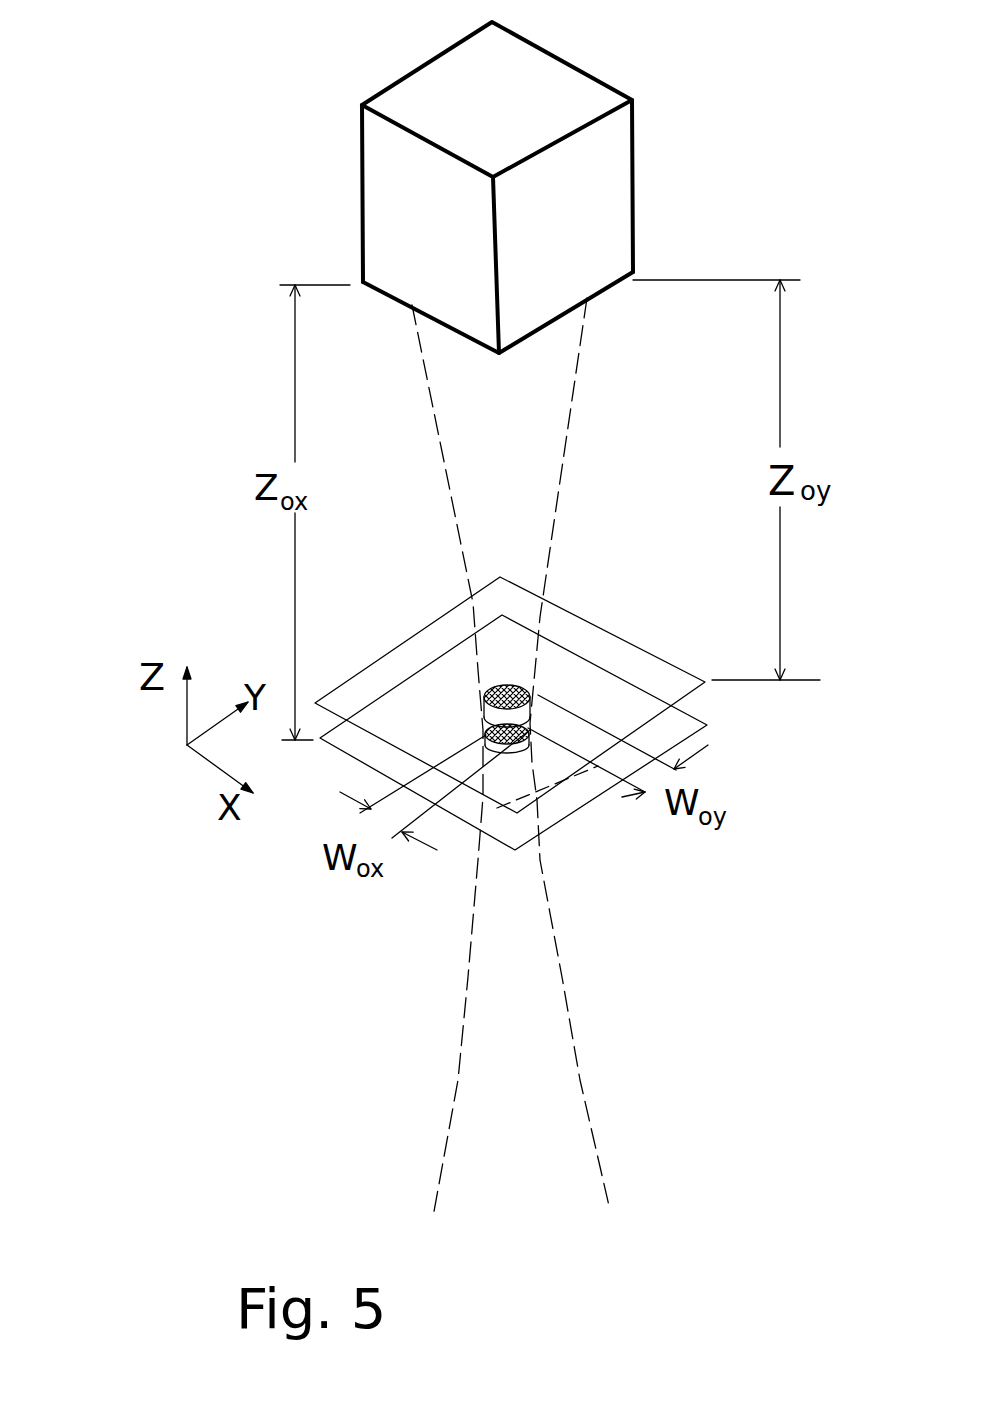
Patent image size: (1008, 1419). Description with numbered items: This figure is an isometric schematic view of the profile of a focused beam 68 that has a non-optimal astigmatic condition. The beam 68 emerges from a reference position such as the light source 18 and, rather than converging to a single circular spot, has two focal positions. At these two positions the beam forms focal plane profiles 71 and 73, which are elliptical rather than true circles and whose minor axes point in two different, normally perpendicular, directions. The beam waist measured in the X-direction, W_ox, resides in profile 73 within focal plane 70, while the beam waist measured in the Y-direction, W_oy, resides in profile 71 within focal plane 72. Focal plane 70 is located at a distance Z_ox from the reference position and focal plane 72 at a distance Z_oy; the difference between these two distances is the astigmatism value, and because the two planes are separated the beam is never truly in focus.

The light source 18 is at (613, 170).
The focused beam 68 is at (573, 410).
The focal plane 70 is at (357, 742).
The focal plane profile 71 is at (500, 687).
The focal plane 72 is at (653, 673).
The focal plane profile 73 is at (487, 717).